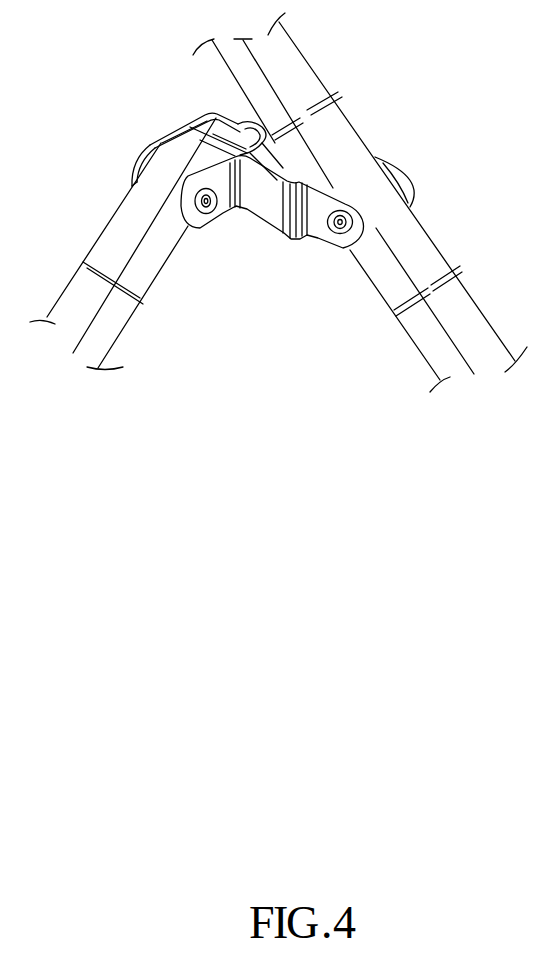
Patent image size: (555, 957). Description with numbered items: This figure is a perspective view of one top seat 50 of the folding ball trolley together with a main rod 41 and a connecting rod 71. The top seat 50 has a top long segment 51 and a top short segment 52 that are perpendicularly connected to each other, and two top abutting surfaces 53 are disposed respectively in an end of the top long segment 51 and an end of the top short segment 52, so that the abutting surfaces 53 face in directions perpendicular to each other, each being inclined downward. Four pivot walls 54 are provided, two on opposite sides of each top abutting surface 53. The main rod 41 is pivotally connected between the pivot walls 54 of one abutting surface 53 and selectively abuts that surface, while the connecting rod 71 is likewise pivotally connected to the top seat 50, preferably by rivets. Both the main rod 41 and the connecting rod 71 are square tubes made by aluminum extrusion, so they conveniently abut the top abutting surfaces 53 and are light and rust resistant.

The main rod 41 is at (443, 282).
The top seat 50 is at (213, 194).
The top long segment 51 is at (417, 173).
The top short segment 52 is at (140, 142).
The top abutting surface 53 is at (218, 128).
The pivot wall 54 is at (184, 132).
The connecting rod 71 is at (107, 245).